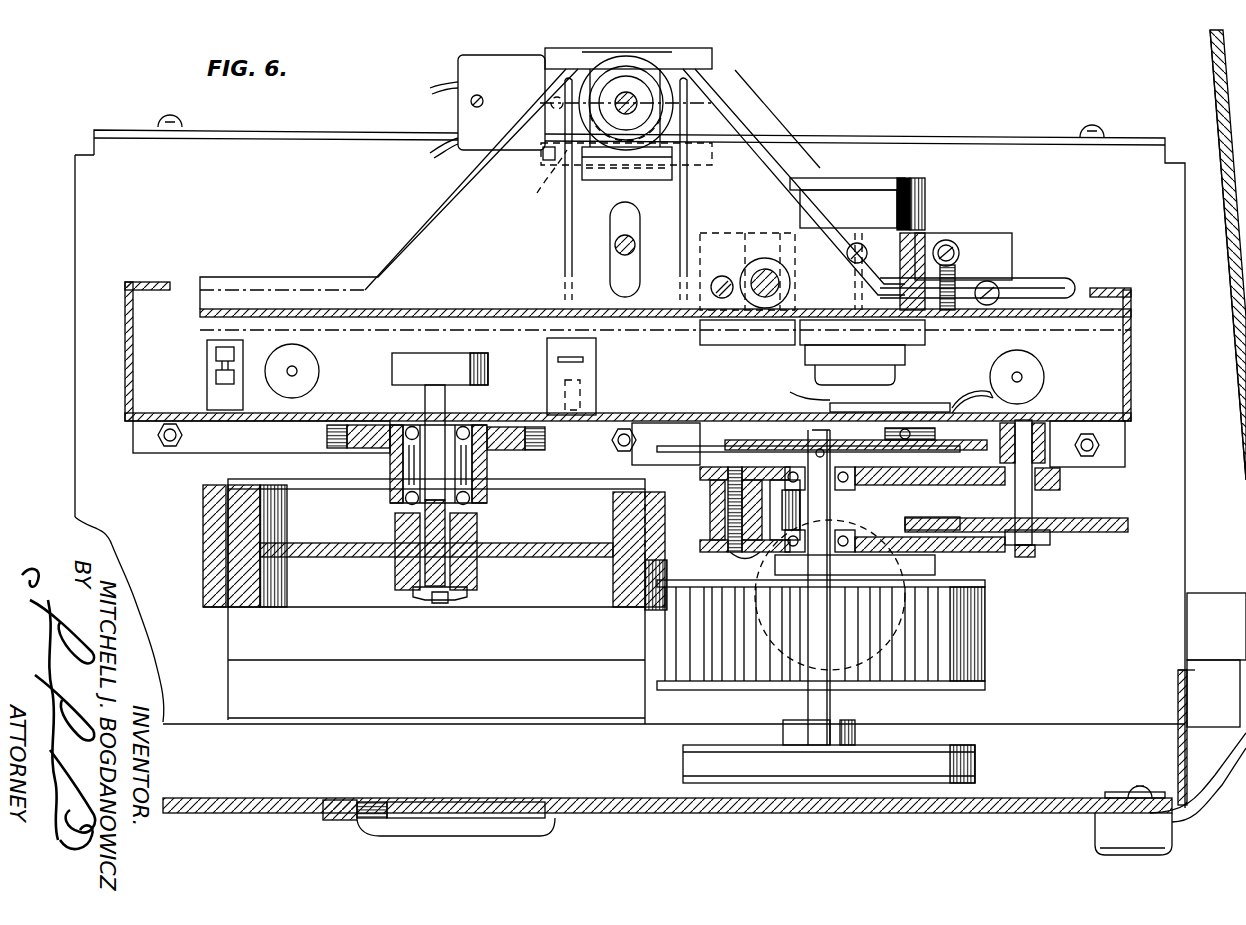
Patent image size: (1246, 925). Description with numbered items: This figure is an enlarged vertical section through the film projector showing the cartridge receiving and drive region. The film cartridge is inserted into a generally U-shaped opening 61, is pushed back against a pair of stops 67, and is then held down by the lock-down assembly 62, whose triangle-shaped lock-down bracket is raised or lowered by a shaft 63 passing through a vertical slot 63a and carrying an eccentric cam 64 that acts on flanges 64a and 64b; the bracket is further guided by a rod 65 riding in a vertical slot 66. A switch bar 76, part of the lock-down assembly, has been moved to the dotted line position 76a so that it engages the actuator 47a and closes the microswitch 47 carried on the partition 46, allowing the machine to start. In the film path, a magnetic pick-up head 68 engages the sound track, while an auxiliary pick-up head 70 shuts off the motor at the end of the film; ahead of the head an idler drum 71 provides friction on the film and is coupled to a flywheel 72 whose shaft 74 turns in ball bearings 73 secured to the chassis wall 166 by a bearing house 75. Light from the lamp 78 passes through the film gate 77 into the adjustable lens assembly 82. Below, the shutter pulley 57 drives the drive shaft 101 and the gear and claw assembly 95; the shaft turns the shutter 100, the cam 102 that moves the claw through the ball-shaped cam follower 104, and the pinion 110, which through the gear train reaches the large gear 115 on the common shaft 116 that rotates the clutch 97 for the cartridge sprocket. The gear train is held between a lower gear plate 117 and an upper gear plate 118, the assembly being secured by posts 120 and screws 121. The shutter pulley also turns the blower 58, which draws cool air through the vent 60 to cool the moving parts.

The partition 46 is at (858, 138).
The microswitch 47 is at (495, 75).
The actuator 47a is at (537, 193).
The shutter pulley 57 is at (975, 753).
The blower 58 is at (950, 648).
The vent 60 is at (445, 838).
The U-shaped opening 61 is at (131, 373).
The lock-down assembly 62 is at (740, 125).
The shaft 63 is at (627, 92).
The vertical slot 63a is at (620, 70).
The eccentric cam 64 is at (650, 72).
The flange 64a is at (592, 50).
The flange 64b is at (612, 178).
The rod 65 is at (612, 262).
The vertical slot 66 is at (640, 222).
The stops 67 is at (300, 369).
The magnetic pick-up head 68 is at (585, 372).
The auxiliary pick-up head 70 is at (217, 385).
The idler drum 71 is at (445, 358).
The flywheel 72 is at (598, 600).
The ball bearings 73 is at (470, 520).
The shaft 74 is at (437, 590).
The bearing house 75 is at (327, 437).
The switch bar 76 is at (712, 66).
The dotted line position 76a is at (543, 160).
The film gate 77 is at (925, 402).
The lamp 78 is at (985, 603).
The lens assembly 82 is at (908, 212).
The gear and claw assembly 95 is at (712, 508).
The clutch 97 is at (1048, 420).
The shutter 100 is at (665, 446).
The drive shaft 101 is at (948, 573).
The cam 102 is at (735, 440).
The cam follower 104 is at (930, 436).
The pinion 110 is at (848, 512).
The large gear 115 is at (1068, 516).
The common shaft 116 is at (1025, 548).
The lower gear plate 117 is at (908, 527).
The upper gear plate 118 is at (635, 472).
The posts 120 is at (712, 532).
The screws 121 is at (745, 560).
The chassis wall 166 is at (305, 416).